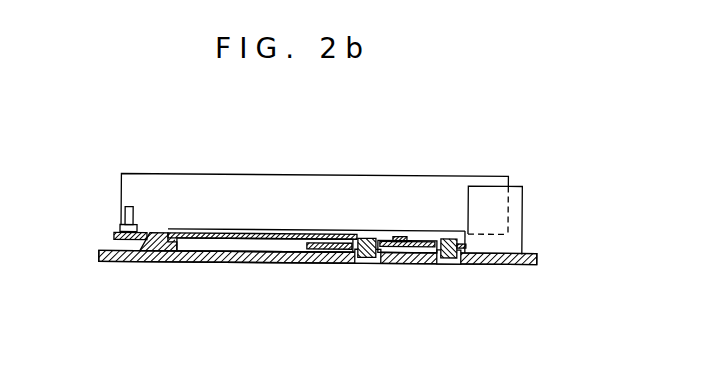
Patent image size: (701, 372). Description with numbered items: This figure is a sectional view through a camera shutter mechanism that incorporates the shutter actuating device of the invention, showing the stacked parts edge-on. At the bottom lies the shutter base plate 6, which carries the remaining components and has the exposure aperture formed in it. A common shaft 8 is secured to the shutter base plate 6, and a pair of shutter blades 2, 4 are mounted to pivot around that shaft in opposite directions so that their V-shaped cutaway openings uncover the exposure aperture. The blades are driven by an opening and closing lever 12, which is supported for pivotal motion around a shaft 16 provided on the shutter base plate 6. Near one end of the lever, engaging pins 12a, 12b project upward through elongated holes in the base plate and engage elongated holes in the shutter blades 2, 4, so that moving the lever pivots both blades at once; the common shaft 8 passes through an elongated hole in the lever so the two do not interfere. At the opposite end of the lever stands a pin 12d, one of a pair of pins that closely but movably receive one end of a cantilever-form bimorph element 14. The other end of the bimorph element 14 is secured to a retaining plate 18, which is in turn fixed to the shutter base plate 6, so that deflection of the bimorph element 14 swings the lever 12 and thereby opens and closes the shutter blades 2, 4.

The shutter blade 2 is at (465, 243).
The shutter blade 4 is at (407, 263).
The shutter base plate 6 is at (110, 250).
The common shaft 8 is at (398, 240).
The opening and closing lever 12 is at (240, 263).
The engaging pin 12a is at (445, 263).
The engaging pin 12b is at (358, 263).
The pin 12d is at (130, 207).
The bimorph element 14 is at (263, 185).
The shaft 16 is at (163, 230).
The retaining plate 18 is at (516, 232).